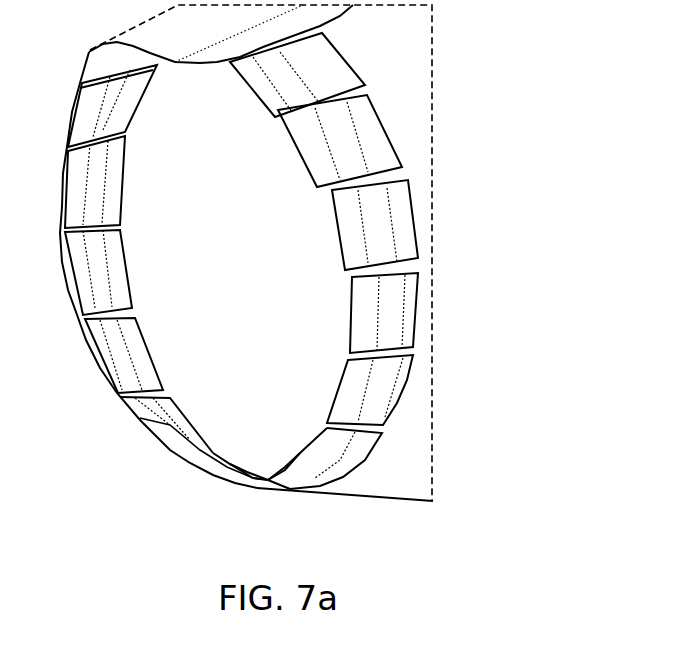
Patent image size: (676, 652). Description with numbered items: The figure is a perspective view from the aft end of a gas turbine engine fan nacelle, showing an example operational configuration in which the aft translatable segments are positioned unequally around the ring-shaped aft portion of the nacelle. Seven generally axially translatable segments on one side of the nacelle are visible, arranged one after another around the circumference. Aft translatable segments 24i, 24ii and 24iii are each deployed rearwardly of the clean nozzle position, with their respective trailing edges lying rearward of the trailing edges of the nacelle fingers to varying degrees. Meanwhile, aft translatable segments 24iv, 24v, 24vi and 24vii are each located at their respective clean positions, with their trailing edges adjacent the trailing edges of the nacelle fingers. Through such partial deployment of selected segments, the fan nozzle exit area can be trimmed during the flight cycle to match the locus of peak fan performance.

The aft translatable segment 24i is at (337, 67).
The aft translatable segment 24ii is at (370, 125).
The aft translatable segment 24iii is at (405, 225).
The aft translatable segment 24iv is at (395, 312).
The aft translatable segment 24v is at (377, 408).
The aft translatable segment 24vi is at (345, 458).
The aft translatable segment 24vii is at (283, 483).